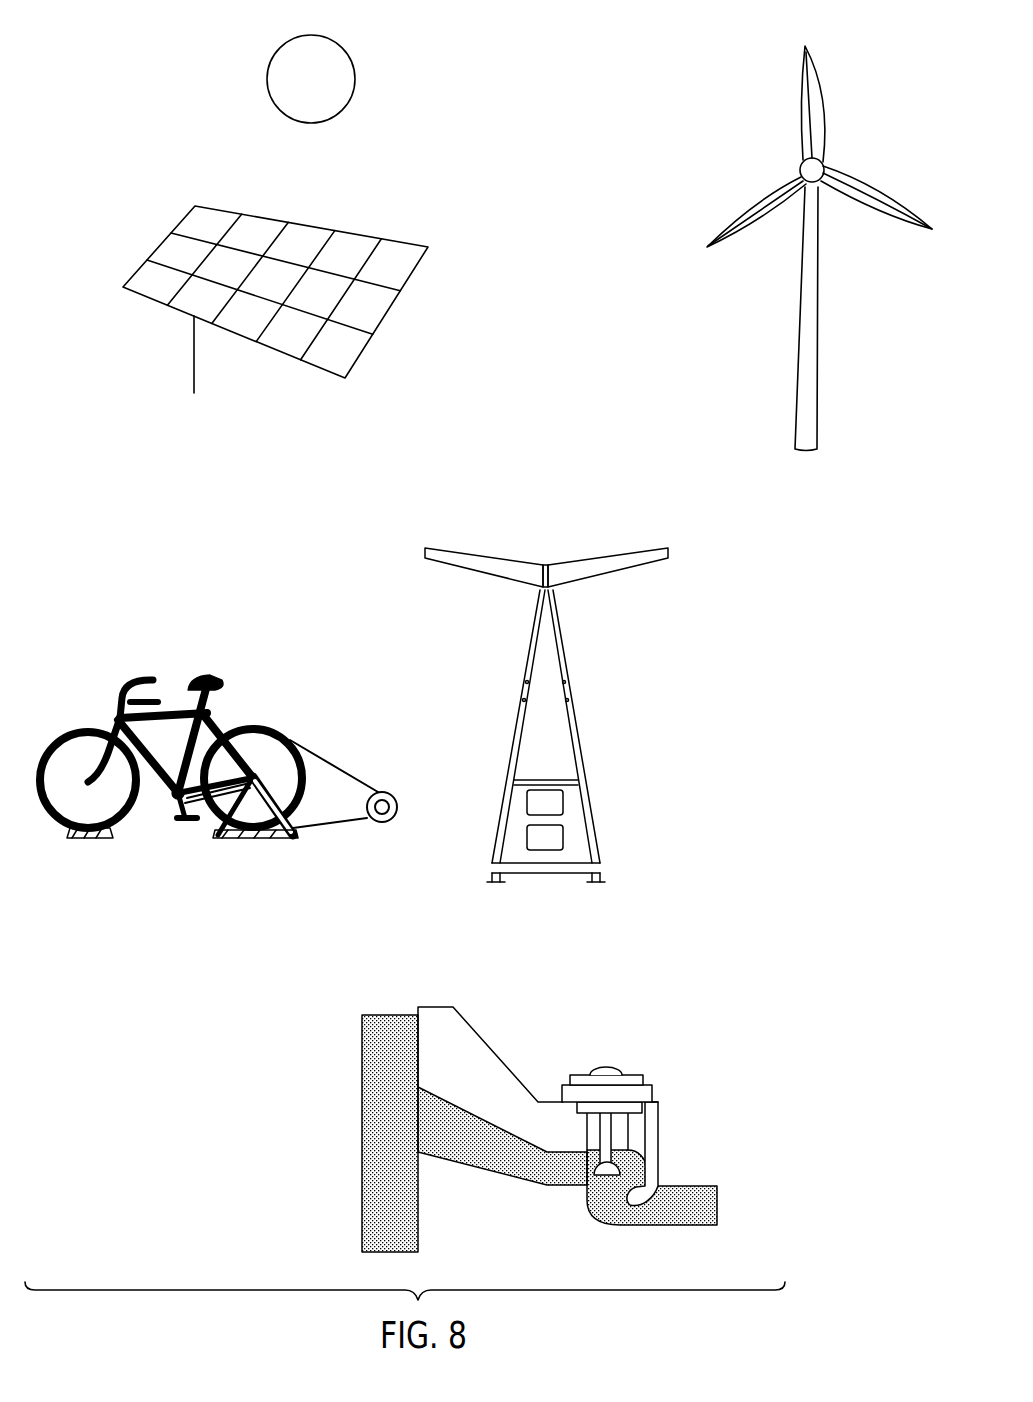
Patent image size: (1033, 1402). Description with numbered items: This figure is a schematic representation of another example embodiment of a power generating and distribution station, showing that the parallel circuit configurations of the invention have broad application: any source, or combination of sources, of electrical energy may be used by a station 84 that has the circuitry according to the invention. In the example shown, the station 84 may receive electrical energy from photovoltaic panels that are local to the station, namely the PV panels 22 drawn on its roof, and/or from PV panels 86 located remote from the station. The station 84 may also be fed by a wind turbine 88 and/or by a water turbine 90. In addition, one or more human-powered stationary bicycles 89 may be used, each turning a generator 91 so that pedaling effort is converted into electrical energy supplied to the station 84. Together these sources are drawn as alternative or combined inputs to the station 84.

The PV panels 22 is at (600, 557).
The station 84 is at (565, 683).
The PV panels 86 is at (323, 369).
The wind turbine 88 is at (818, 405).
The human-powered stationary bicycles 89 is at (222, 677).
The water turbine 90 is at (652, 1092).
The generator 91 is at (381, 822).